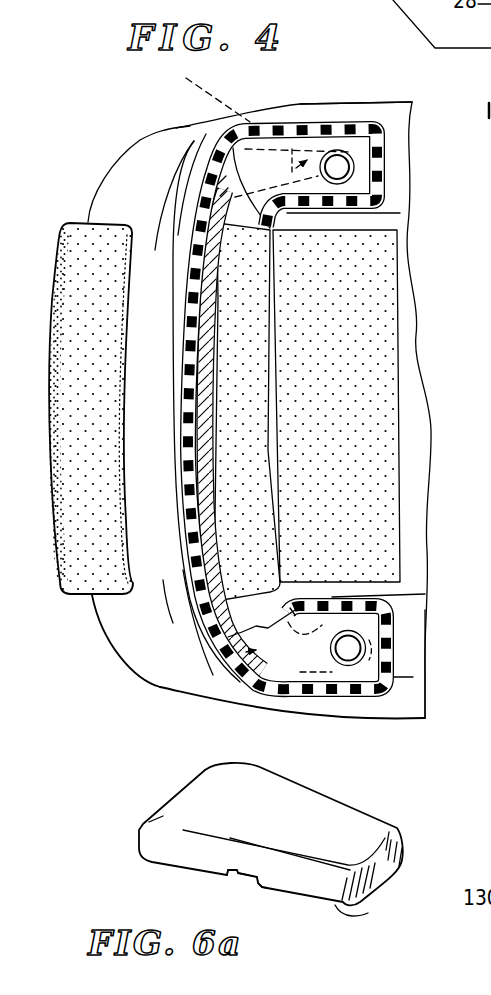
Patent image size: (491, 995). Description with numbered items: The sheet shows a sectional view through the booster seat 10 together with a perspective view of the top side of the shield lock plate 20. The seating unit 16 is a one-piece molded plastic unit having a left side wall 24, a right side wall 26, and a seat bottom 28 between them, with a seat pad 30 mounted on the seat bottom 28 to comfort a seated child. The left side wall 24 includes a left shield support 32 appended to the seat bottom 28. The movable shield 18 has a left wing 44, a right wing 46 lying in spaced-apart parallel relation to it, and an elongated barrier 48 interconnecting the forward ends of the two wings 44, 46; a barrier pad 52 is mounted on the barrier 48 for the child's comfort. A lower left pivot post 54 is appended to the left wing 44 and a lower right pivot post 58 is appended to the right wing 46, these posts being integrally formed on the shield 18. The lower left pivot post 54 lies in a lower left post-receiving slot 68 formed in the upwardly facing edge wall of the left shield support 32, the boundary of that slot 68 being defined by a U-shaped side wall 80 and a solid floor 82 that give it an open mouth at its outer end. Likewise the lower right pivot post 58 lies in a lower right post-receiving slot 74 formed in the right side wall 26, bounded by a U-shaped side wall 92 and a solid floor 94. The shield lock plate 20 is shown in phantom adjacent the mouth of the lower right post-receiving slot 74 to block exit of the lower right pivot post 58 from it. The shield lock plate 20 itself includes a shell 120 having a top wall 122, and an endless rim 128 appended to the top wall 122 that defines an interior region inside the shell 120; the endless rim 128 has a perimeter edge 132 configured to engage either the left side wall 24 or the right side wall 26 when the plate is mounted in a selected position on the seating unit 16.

In FIG. 4, the booster seat 10 is at (122, 121).
In FIG. 4, the seating unit 16 is at (316, 100).
In FIG. 4, the shield 18 is at (102, 171).
In FIG. 4, the shield lock plate 20 is at (201, 91).
In FIG. 6A, the shield lock plate 20 is at (151, 805).
In FIG. 4, the left side wall 24 is at (411, 721).
In FIG. 4, the right side wall 26 is at (356, 100).
In FIG. 4, the seat bottom 28 is at (261, 109).
In FIG. 4, the seat pad 30 is at (388, 262).
In FIG. 4, the left shield support 32 is at (334, 722).
In FIG. 4, the left wing 44 is at (286, 690).
In FIG. 4, the right wing 46 is at (329, 120).
In FIG. 4, the elongated barrier 48 is at (97, 628).
In FIG. 4, the barrier pad 52 is at (82, 243).
In FIG. 4, the lower left pivot post 54 is at (348, 648).
In FIG. 4, the lower right pivot post 58 is at (340, 167).
In FIG. 4, the lower left post-receiving slot 68 is at (207, 670).
In FIG. 4, the lower right post-receiving slot 74 is at (190, 182).
In FIG. 4, the U-shaped side wall 80 is at (294, 606).
In FIG. 4, the solid floor 82 is at (306, 662).
In FIG. 4, the U-shaped side wall 92 is at (323, 192).
In FIG. 4, the solid floor 94 is at (288, 160).
In FIG. 6A, the shell 120 is at (382, 856).
In FIG. 6A, the top wall 122 is at (330, 812).
In FIG. 6A, the endless rim 128 is at (287, 880).
In FIG. 6A, the perimeter edge 132 is at (374, 910).